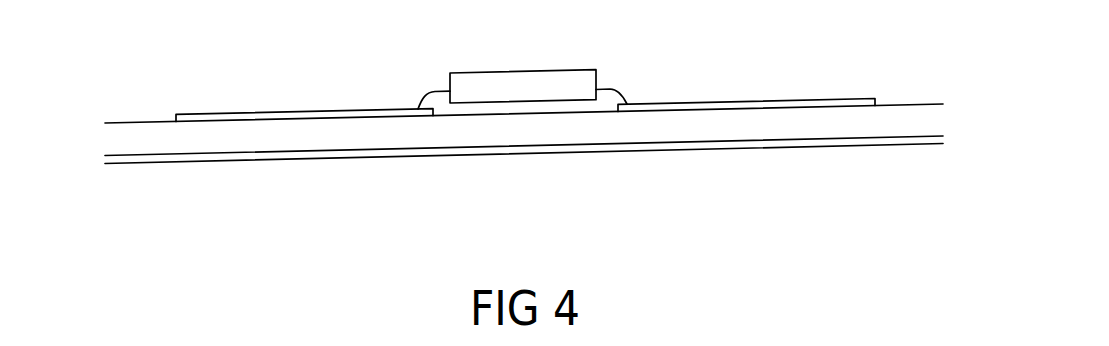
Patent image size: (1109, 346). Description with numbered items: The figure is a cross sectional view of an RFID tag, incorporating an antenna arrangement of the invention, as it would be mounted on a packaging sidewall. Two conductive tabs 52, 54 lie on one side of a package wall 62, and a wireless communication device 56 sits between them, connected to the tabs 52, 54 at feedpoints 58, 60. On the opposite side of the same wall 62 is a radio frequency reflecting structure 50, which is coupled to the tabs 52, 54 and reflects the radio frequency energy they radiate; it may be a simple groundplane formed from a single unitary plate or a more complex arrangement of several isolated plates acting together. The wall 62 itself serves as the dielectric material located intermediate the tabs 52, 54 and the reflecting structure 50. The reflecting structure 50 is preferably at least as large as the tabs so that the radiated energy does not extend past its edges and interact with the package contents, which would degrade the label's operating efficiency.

The radio frequency reflecting structure 50 is at (396, 162).
The tab 52 is at (249, 104).
The tab 54 is at (732, 92).
The wireless communication device 56 is at (524, 63).
The feedpoint 58 is at (431, 82).
The feedpoint 60 is at (620, 77).
The package wall 62 is at (761, 124).